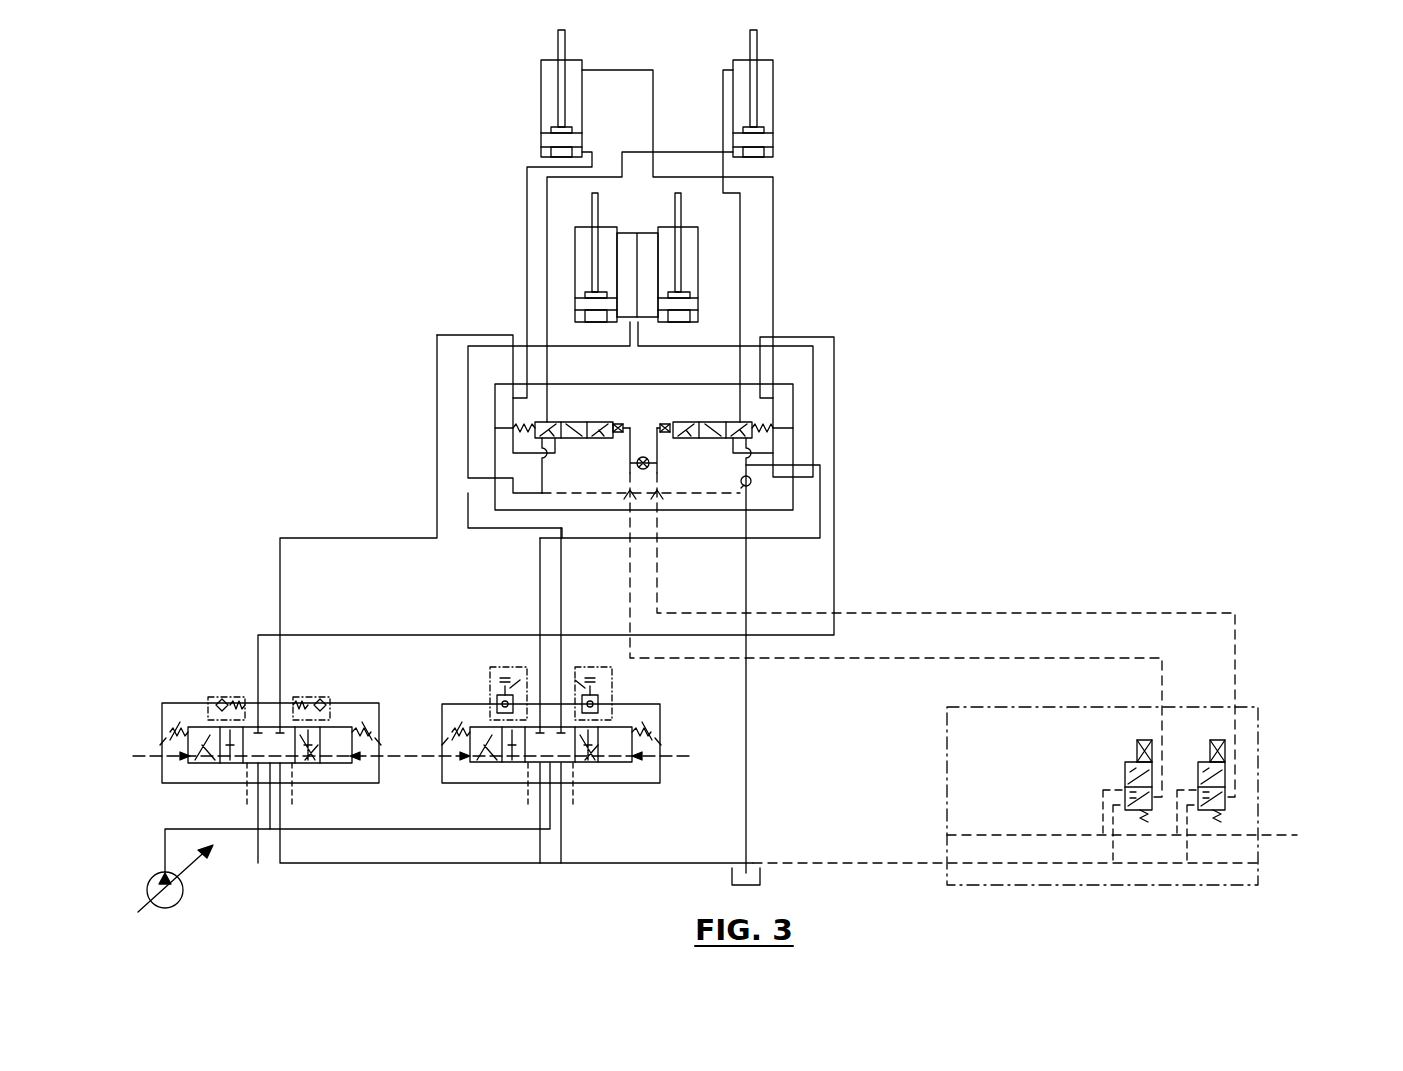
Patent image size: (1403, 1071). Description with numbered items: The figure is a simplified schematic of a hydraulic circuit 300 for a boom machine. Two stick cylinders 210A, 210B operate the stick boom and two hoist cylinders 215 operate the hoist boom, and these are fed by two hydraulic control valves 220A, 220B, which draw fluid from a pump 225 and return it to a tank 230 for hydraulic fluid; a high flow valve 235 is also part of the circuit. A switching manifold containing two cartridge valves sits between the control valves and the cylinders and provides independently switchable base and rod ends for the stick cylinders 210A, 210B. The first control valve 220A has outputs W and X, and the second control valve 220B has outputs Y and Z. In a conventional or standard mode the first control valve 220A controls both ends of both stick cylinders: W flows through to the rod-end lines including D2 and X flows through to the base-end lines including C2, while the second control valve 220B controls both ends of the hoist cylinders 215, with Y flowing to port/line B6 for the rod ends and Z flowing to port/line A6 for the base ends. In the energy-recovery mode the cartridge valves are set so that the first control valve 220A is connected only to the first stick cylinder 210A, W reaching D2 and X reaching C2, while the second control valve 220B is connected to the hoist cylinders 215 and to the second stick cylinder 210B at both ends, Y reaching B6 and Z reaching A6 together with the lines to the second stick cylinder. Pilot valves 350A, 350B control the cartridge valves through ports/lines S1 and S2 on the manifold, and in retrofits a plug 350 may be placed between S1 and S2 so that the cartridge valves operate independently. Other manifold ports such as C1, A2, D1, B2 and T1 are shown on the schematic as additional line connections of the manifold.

The hydraulic circuit 300 is at (933, 166).
The first stick cylinder 210A is at (541, 95).
The second stick cylinder 210B is at (773, 95).
The hoist cylinders 215 is at (575, 265).
The plug 350 is at (643, 457).
The high flow valve 235 is at (752, 482).
The first control valve 220A is at (172, 703).
The second control valve 220B is at (660, 730).
The pump 225 is at (185, 900).
The tank 230 is at (732, 875).
The first pilot valve 350A is at (1125, 772).
The second pilot valve 350B is at (1225, 768).
The port/line C2 is at (527, 232).
The port C1 is at (452, 330).
The port/line A6 is at (465, 418).
The port A2 is at (437, 510).
The port/line D2 is at (775, 263).
The port D1 is at (834, 345).
The port/line B6 is at (813, 385).
The port B2 is at (820, 520).
The tank port T1 is at (748, 560).
The port/line S1 is at (657, 550).
The port/line S2 is at (630, 553).
The control valve output W is at (225, 680).
The control valve output X is at (314, 680).
The control valve output Y is at (508, 680).
The control valve output Z is at (596, 680).